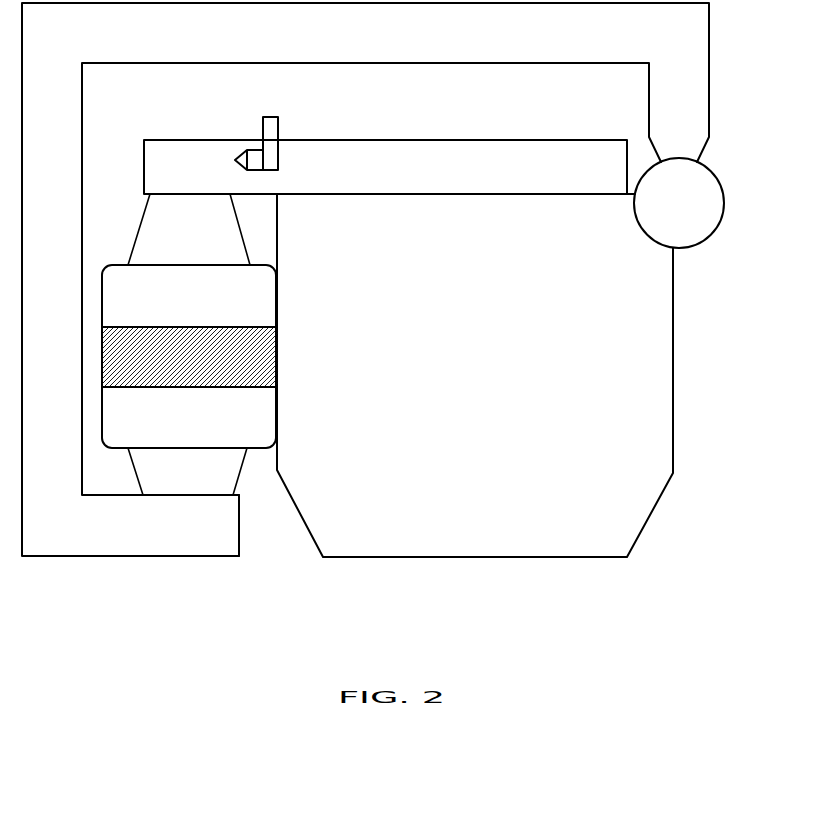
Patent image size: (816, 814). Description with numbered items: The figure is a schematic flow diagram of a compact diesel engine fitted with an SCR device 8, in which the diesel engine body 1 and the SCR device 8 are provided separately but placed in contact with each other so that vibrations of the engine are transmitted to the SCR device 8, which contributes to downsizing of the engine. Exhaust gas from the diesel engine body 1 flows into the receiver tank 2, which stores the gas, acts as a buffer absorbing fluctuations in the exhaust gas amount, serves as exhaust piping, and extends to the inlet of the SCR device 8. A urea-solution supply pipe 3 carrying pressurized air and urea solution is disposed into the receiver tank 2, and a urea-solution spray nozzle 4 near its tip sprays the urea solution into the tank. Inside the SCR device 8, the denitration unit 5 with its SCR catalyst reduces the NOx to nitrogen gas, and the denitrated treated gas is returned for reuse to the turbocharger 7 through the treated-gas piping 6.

The diesel engine body 1 is at (432, 527).
The receiver tank 2 is at (500, 158).
The urea-solution supply pipe 3 is at (279, 126).
The urea-solution spray nozzle 4 is at (247, 141).
The denitration unit 5 is at (250, 360).
The treated-gas piping 6 is at (100, 538).
The turbocharger 7 is at (693, 228).
The SCR device 8 is at (283, 310).